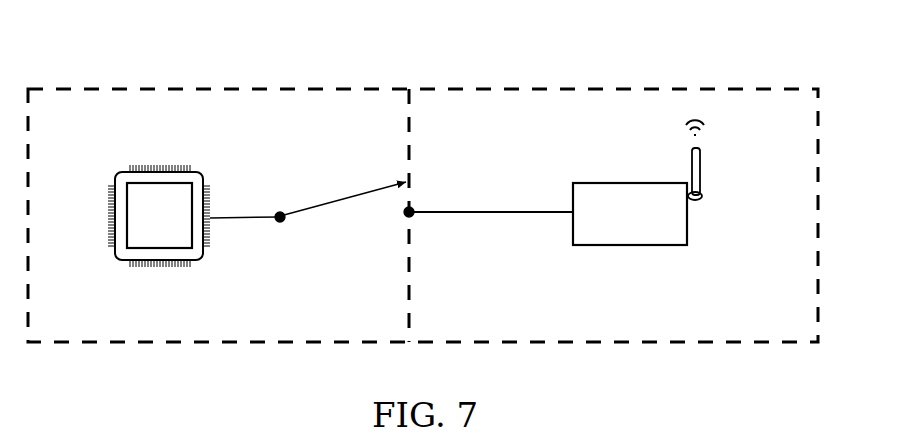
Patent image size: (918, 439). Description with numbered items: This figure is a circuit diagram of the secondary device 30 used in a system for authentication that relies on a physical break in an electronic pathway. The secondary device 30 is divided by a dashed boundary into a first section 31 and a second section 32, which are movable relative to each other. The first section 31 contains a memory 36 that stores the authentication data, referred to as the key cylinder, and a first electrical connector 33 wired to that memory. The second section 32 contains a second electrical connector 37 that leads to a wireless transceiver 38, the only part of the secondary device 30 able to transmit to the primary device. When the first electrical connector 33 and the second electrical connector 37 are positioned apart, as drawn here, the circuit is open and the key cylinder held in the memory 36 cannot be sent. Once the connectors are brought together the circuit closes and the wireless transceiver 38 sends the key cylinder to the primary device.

The secondary device 30 is at (540, 75).
The first section 31 is at (241, 95).
The second section 32 is at (680, 334).
The first electrical connector 33 is at (283, 211).
The memory 36 is at (197, 172).
The second electrical connector 37 is at (413, 208).
The wireless transceiver 38 is at (608, 183).